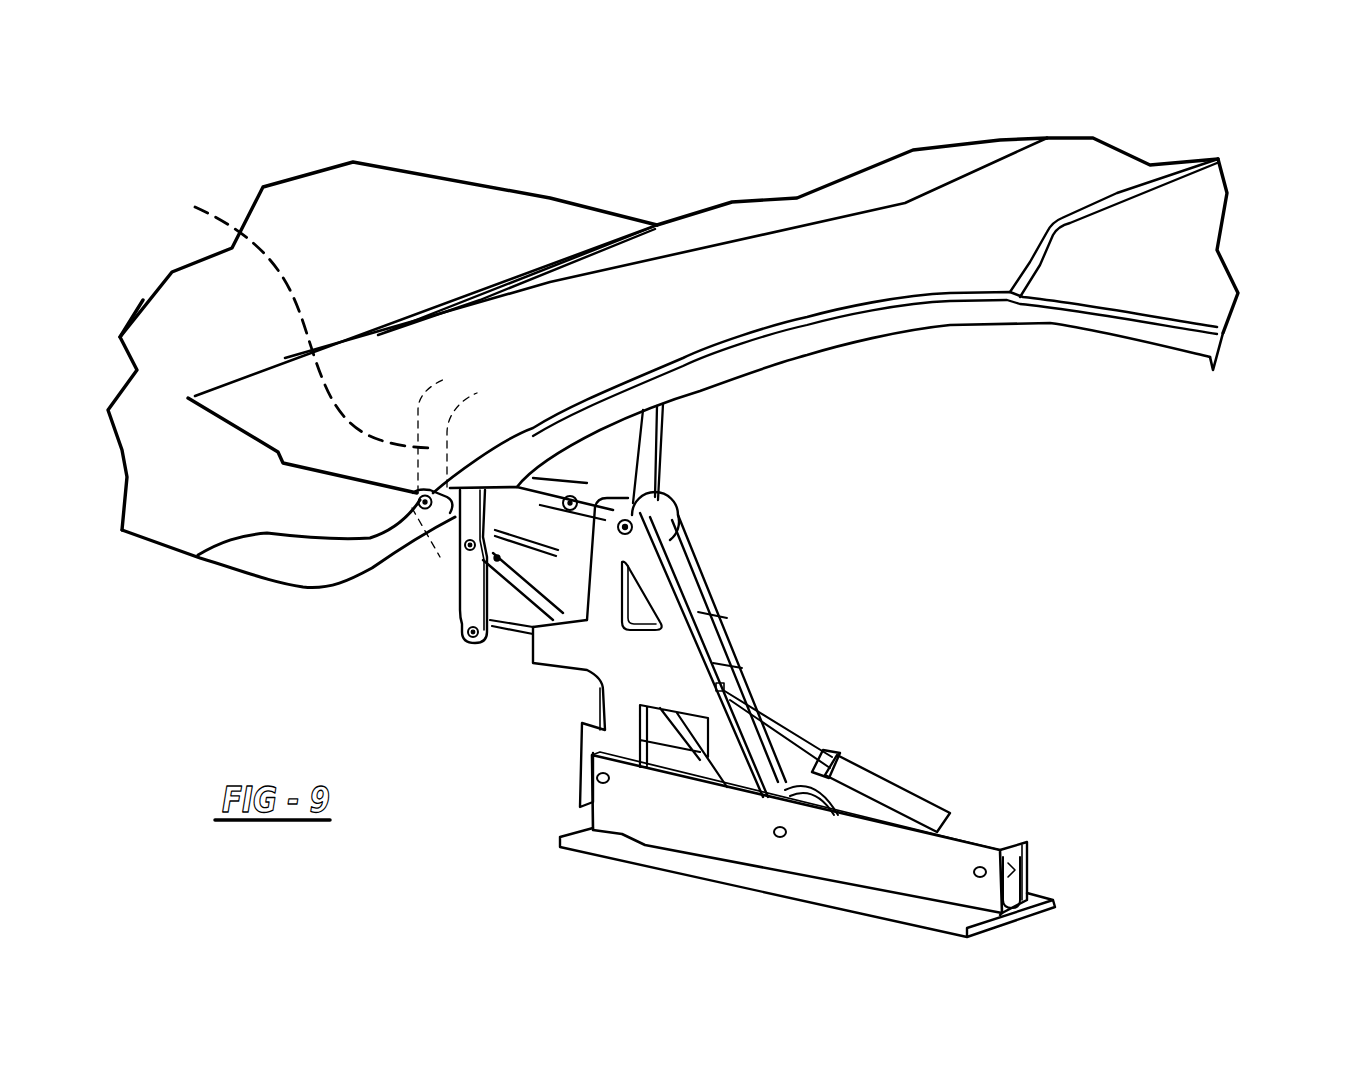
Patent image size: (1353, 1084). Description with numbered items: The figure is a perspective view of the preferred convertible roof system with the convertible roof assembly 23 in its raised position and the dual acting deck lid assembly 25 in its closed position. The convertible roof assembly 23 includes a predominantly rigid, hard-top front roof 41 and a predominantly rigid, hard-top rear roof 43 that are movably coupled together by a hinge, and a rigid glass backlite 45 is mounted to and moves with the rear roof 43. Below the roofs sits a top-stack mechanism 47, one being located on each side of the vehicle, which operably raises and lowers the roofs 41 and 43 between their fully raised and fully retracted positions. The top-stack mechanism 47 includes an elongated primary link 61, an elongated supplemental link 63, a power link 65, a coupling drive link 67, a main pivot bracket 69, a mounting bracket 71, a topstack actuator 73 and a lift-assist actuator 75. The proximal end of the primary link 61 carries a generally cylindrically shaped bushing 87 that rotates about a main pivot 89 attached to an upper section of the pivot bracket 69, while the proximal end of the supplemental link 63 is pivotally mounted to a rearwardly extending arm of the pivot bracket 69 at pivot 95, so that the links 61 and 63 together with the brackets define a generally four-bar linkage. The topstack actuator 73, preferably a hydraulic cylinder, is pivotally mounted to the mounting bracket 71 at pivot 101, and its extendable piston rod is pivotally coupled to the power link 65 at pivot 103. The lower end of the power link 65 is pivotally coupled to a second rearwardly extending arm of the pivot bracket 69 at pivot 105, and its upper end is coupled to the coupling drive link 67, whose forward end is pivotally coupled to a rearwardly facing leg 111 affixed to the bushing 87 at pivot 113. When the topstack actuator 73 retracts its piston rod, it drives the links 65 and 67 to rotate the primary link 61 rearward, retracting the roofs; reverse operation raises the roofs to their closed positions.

The convertible roof assembly 23 is at (1190, 127).
The dual acting deck lid assembly 25 is at (469, 148).
The front roof 41 is at (1197, 218).
The rear roof 43 is at (1073, 170).
The backlite 45 is at (887, 187).
The top-stack mechanism 47 is at (808, 631).
The primary link 61 is at (645, 445).
The supplemental link 63 is at (322, 370).
The power link 65 is at (465, 590).
The coupling drive link 67 is at (552, 492).
The main pivot bracket 69 is at (447, 533).
The mounting bracket 71 is at (663, 817).
The topstack actuator 73 is at (520, 585).
The lift-assist actuator 75 is at (870, 773).
The bushing 87 is at (660, 523).
The main pivot 89 is at (701, 582).
The pivot 95 is at (423, 505).
The pivot 101 is at (783, 838).
The pivot 103 is at (447, 554).
The pivot 105 is at (466, 635).
The rearwardly facing leg 111 is at (593, 507).
The pivot 113 is at (549, 510).